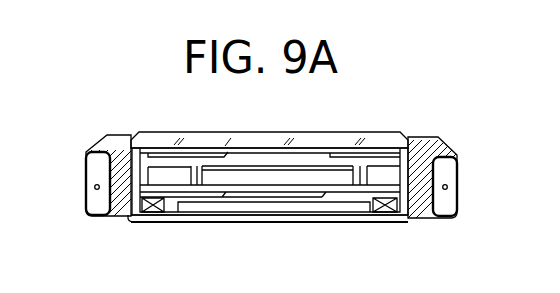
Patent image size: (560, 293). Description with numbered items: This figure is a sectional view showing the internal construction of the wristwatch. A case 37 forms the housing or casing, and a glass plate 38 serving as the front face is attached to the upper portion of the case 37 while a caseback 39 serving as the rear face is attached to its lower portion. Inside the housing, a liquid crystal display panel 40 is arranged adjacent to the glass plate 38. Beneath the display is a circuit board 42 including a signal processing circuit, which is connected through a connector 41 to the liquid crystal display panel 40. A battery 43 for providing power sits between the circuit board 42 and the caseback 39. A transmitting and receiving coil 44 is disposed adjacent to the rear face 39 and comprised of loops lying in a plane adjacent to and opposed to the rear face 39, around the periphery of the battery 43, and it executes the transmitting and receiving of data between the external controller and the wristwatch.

The case 37 is at (448, 152).
The glass plate 38 is at (402, 150).
The caseback 39 is at (408, 221).
The liquid crystal display panel 40 is at (315, 163).
The connector 41 is at (158, 178).
The circuit board 42 is at (145, 189).
The battery 43 is at (330, 208).
The transmitting and receiving coil 44 is at (155, 212).